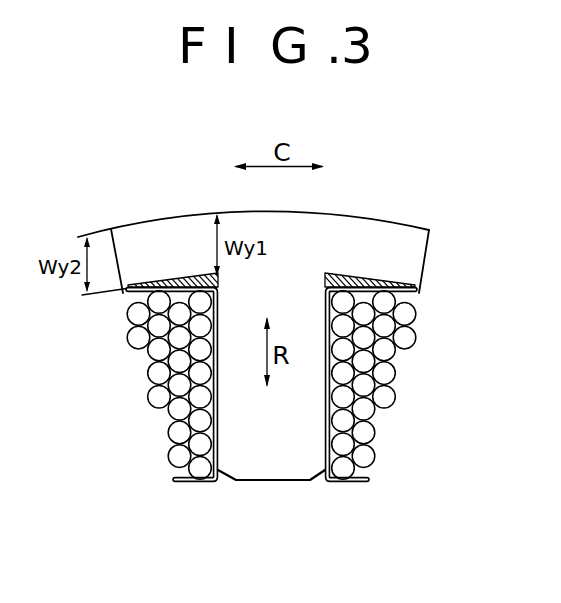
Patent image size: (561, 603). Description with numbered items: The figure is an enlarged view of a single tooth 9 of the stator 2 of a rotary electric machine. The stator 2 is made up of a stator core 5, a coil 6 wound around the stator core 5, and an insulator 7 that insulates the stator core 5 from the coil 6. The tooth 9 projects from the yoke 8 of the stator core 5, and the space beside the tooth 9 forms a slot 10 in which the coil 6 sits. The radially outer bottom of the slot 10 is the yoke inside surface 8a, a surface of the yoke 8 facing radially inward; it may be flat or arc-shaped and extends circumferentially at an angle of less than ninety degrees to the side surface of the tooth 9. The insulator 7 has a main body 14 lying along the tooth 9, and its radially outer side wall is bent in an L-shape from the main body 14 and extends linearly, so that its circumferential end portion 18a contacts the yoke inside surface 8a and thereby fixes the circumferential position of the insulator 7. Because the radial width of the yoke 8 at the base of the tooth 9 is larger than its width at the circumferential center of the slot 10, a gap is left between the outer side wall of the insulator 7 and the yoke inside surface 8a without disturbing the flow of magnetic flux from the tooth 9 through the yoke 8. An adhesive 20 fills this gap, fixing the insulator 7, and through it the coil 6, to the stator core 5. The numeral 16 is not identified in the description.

The stator 2 is at (420, 200).
The stator core 5 is at (373, 212).
The coil 6 is at (152, 374).
The insulator 7 is at (166, 486).
The yoke 8 is at (182, 237).
The yoke inside surface 8a is at (162, 282).
The tooth 9 is at (267, 482).
The slot 10 is at (266, 385).
The main body 14 is at (213, 415).
The flange of insulator 16 is at (185, 485).
The end portion 18a is at (128, 292).
The adhesive 20 is at (197, 282).